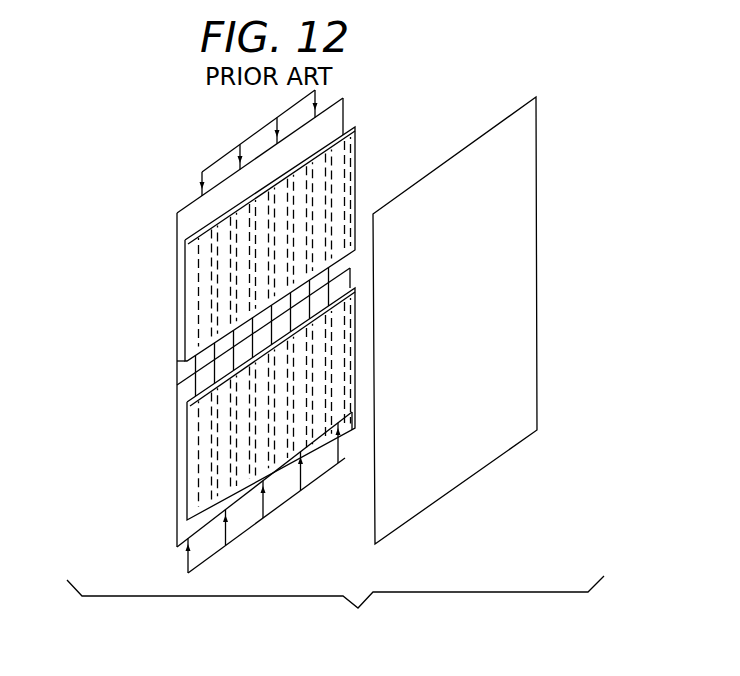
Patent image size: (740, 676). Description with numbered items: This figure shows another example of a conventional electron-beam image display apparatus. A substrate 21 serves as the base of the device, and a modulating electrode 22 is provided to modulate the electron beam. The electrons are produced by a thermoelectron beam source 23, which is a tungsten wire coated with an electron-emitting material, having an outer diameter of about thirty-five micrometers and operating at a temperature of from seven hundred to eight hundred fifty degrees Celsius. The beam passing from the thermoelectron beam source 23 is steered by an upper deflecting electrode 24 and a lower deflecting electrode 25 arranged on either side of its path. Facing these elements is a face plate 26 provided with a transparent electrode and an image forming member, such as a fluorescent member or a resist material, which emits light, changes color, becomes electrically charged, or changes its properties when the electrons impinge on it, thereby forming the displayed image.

The substrate 21 is at (183, 228).
The modulating electrode 22 is at (202, 172).
The thermoelectron beam source 23 is at (185, 388).
The upper deflecting electrode 24 is at (187, 303).
The lower deflecting electrode 25 is at (187, 467).
The face plate 26 is at (523, 226).